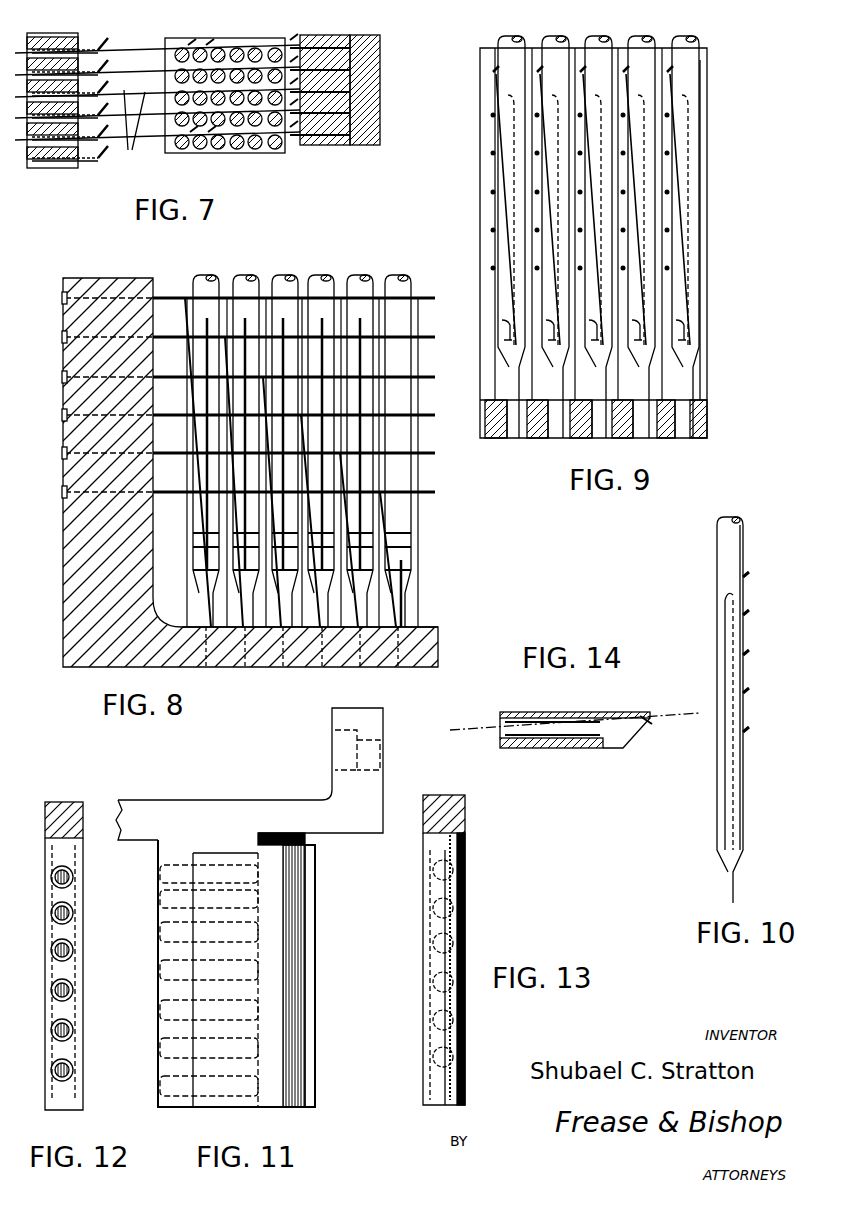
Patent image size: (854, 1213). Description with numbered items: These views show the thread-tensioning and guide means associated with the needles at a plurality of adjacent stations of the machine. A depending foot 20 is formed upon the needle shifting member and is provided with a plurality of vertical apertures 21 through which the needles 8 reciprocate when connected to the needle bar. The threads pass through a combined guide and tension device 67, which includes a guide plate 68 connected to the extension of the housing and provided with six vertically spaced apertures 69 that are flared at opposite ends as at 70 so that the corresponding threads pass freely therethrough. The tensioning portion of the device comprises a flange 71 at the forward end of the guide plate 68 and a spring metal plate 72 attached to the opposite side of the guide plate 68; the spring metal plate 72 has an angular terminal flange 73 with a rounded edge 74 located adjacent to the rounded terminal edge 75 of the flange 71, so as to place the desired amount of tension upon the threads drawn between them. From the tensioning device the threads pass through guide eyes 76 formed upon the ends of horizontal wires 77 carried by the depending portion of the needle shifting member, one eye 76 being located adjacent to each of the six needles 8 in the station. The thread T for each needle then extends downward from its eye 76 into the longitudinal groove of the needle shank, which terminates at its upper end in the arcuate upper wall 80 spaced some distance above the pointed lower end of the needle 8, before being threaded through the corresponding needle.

In FIG. 7, the needle 8 is at (240, 158).
In FIG. 9, the needle 8 is at (655, 103).
In FIG. 8, the needle 8 is at (244, 270).
In FIG. 10, the needle 8 is at (733, 572).
In FIG. 9, the depending foot 20 is at (710, 420).
In FIG. 8, the depending foot 20 is at (438, 632).
In FIG. 9, the vertical apertures 21 is at (548, 440).
In FIG. 8, the vertical apertures 21 is at (280, 665).
In FIG. 7, the combined guide and tension device 67 is at (52, 172).
In FIG. 14, the combined guide and tension device 67 is at (560, 712).
In FIG. 11, the combined guide and tension device 67 is at (230, 795).
In FIG. 12, the combined guide and tension device 67 is at (40, 835).
In FIG. 13, the combined guide and tension device 67 is at (468, 895).
In FIG. 14, the guide plate 68 is at (520, 748).
In FIG. 11, the guide plate 68 is at (166, 848).
In FIG. 12, the guide plate 68 is at (85, 975).
In FIG. 13, the guide plate 68 is at (460, 820).
In FIG. 7, the vertically spaced apertures 69 is at (30, 160).
In FIG. 11, the vertically spaced apertures 69 is at (243, 965).
In FIG. 12, the vertically spaced apertures 69 is at (68, 913).
In FIG. 13, the vertically spaced apertures 69 is at (450, 970).
In FIG. 14, the flared ends 70 is at (500, 728).
In FIG. 12, the flared ends 70 is at (70, 1068).
In FIG. 14, the flange 71 is at (643, 712).
In FIG. 11, the flange 71 is at (308, 843).
In FIG. 14, the spring metal plate 72 is at (612, 750).
In FIG. 11, the spring metal plate 72 is at (275, 885).
In FIG. 13, the spring metal plate 72 is at (425, 970).
In FIG. 14, the angular terminal flange 73 is at (635, 740).
In FIG. 11, the angular terminal flange 73 is at (292, 910).
In FIG. 13, the angular terminal flange 73 is at (440, 915).
In FIG. 14, the rounded edge 74 is at (650, 728).
In FIG. 13, the rounded edge 74 is at (452, 1050).
In FIG. 14, the rounded terminal edge 75 is at (648, 716).
In FIG. 13, the rounded terminal edge 75 is at (460, 1045).
In FIG. 7, the guide eyes 76 is at (208, 42).
In FIG. 9, the guide eyes 76 is at (493, 72).
In FIG. 8, the guide eyes 76 is at (190, 300).
In FIG. 10, the guide eyes 76 is at (748, 578).
In FIG. 7, the horizontal wires 77 is at (335, 77).
In FIG. 9, the horizontal wires 77 is at (490, 194).
In FIG. 8, the horizontal wires 77 is at (176, 382).
In FIG. 8, the arcuate upper wall 80 is at (360, 320).
In FIG. 7, the thread T is at (136, 160).
In FIG. 9, the thread T is at (690, 378).
In FIG. 8, the thread T is at (304, 395).
In FIG. 10, the thread T is at (745, 593).
In FIG. 14, the thread T is at (466, 728).